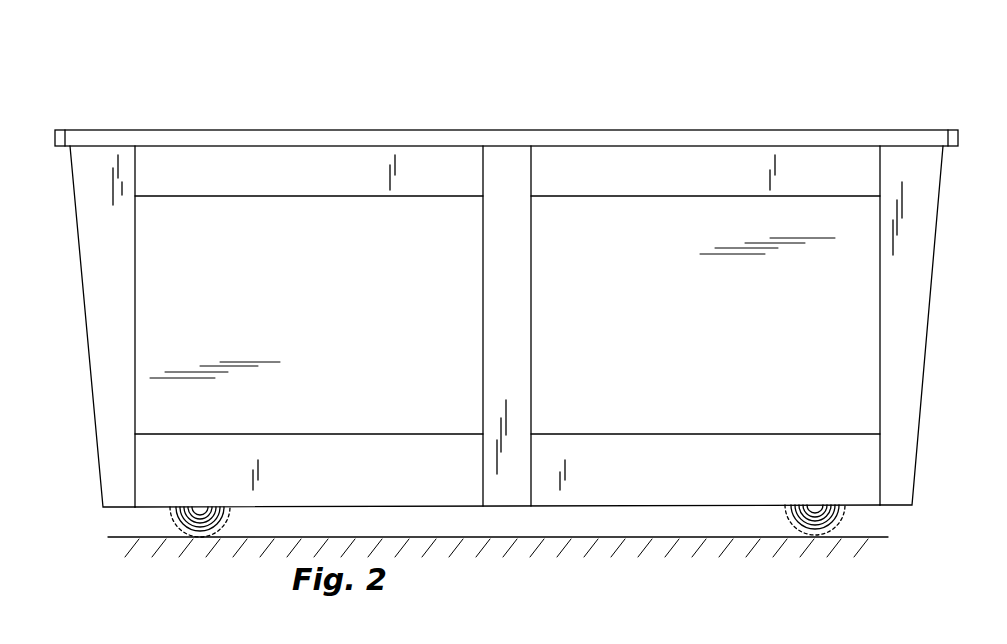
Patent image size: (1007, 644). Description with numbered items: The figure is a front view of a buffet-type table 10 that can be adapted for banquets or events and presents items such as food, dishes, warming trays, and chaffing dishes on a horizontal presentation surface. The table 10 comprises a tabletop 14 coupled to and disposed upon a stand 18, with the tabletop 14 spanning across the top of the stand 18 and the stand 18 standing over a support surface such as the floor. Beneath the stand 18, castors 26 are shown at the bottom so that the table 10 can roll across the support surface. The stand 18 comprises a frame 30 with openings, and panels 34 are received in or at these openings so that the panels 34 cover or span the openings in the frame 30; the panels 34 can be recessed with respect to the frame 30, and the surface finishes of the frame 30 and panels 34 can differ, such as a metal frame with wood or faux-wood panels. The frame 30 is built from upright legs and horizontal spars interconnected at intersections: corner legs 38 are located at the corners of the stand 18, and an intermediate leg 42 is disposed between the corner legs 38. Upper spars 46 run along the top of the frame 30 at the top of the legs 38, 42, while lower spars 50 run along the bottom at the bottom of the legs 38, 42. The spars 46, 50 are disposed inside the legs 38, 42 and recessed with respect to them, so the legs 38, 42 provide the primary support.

The buffet-type table 10 is at (705, 122).
The tabletop 14 is at (632, 126).
The stand 18 is at (108, 312).
The castors 26 is at (812, 530).
The frame 30 is at (108, 268).
The panels 34 is at (633, 349).
The corner legs 38 is at (912, 316).
The intermediate legs 42 is at (508, 304).
The upper spars 46 is at (284, 162).
The lower spars 50 is at (609, 485).